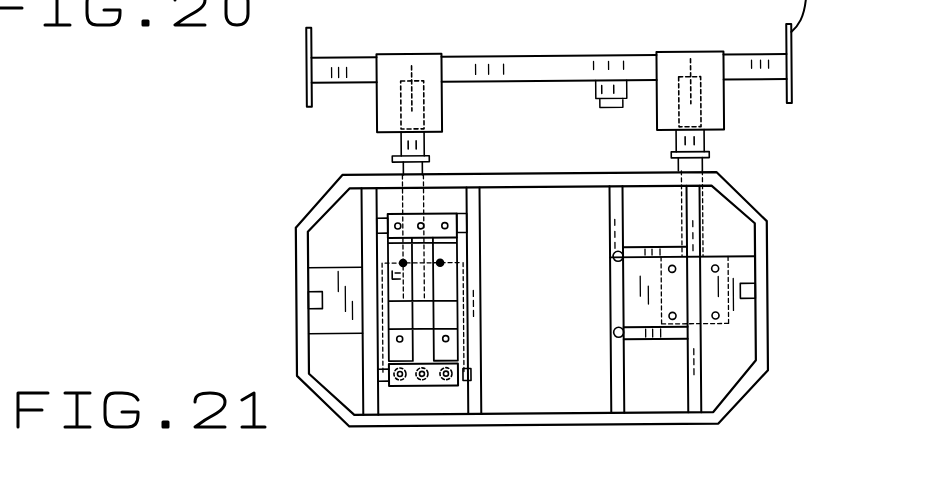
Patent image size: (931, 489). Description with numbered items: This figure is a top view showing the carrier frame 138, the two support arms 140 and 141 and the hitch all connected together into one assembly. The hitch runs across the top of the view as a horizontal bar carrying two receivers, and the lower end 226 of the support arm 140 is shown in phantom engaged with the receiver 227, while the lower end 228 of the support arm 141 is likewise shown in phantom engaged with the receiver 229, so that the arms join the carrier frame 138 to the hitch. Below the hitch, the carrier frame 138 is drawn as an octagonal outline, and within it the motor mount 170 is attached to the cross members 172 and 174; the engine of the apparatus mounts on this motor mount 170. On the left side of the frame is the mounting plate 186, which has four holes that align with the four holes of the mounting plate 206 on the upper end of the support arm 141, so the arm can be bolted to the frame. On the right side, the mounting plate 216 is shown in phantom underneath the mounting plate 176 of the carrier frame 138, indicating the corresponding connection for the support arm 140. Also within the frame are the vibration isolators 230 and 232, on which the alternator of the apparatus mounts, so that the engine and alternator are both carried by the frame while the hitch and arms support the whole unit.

The carrier frame 138 is at (740, 204).
The support arm 140 is at (700, 163).
The support arm 141 is at (400, 162).
The motor mount 170 is at (393, 248).
The cross member 172 is at (457, 174).
The cross member 174 is at (465, 376).
The mounting plate 176 is at (742, 272).
The mounting plate 186 is at (340, 275).
The mounting plate 206 is at (447, 313).
The mounting plate 216 is at (728, 313).
The lower end of support arm 226 is at (700, 142).
The receiver 227 is at (693, 72).
The lower end of support arm 228 is at (400, 145).
The receiver 229 is at (413, 78).
The vibration isolator 230 is at (618, 338).
The vibration isolator 232 is at (614, 260).